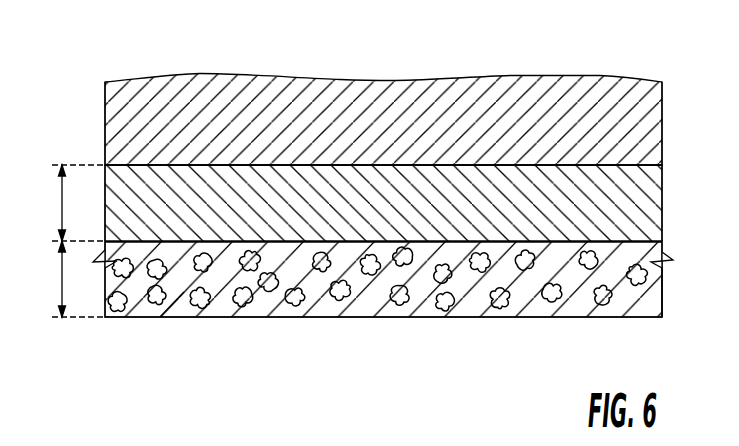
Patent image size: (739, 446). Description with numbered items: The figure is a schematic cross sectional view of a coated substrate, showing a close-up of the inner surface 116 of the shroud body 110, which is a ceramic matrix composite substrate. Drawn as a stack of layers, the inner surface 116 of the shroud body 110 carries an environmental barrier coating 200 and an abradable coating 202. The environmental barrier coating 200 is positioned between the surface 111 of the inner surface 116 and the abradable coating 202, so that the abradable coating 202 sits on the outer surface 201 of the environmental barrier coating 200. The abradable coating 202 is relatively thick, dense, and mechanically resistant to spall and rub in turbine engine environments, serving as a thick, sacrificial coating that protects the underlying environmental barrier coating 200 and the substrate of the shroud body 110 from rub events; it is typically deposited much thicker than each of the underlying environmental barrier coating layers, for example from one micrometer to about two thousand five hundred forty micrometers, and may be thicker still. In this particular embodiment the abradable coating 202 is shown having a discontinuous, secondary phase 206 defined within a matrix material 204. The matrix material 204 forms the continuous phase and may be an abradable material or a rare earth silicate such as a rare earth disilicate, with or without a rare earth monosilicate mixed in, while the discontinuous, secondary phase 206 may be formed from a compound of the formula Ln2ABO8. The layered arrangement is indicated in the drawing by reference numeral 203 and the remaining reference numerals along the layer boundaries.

The shroud body 110 is at (393, 97).
The surface 111 is at (245, 176).
The inner surface 116 is at (336, 380).
The environmental barrier coating 200 is at (668, 166).
The outer surface 201 is at (543, 253).
The abradable coating 202 is at (678, 299).
The particle-containing layer 203 is at (455, 378).
The matrix material 204 is at (170, 307).
The discontinuous, secondary phase 206 is at (292, 309).